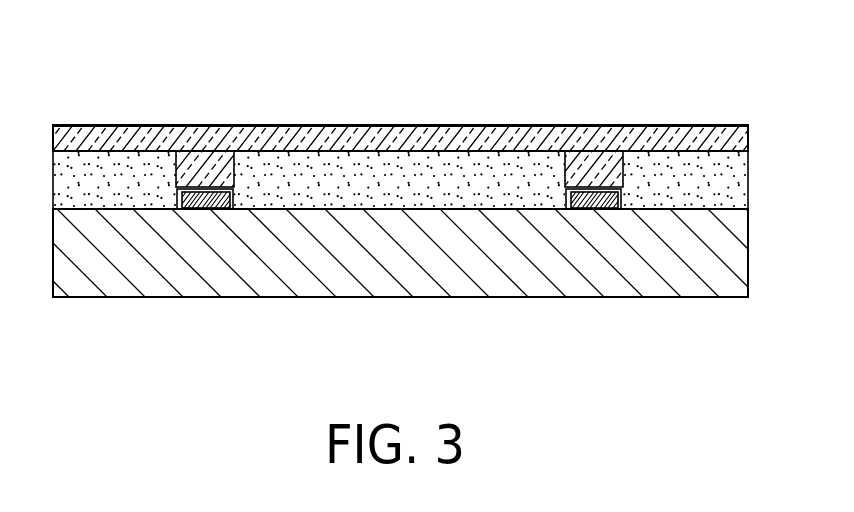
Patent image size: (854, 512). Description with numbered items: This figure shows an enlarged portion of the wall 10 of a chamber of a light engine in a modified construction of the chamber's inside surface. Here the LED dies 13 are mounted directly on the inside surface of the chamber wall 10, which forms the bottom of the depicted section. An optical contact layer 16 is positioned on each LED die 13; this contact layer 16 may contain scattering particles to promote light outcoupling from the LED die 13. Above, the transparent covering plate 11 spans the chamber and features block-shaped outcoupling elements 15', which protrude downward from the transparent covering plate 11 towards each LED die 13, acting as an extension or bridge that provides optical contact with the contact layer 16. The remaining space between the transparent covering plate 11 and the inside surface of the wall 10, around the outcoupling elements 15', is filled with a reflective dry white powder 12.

The wall 10 is at (463, 262).
The transparent covering plate 11 is at (457, 140).
The reflective dry white powder 12 is at (122, 168).
The LED die 13 is at (207, 205).
The block-shaped outcoupling element 15' is at (401, 122).
The optical contact layer 16 is at (233, 210).